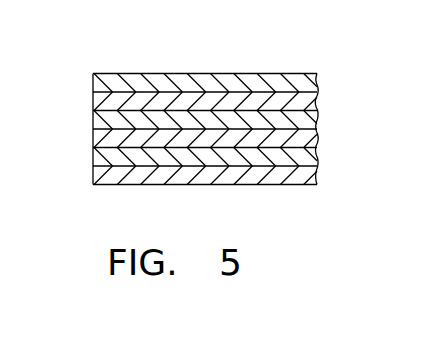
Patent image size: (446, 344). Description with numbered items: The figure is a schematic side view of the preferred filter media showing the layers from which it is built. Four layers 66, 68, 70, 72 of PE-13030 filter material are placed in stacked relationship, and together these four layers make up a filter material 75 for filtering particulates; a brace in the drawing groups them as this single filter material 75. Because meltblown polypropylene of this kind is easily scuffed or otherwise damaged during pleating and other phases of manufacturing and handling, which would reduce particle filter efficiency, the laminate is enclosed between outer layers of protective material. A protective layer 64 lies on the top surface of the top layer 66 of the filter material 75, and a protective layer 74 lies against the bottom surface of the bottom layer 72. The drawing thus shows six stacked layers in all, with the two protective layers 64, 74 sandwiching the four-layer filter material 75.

The protective layer 64 is at (317, 81).
The top layer of filter material 66 is at (317, 100).
The layer of filter material 68 is at (317, 120).
The layer of filter material 70 is at (317, 137).
The bottom layer of filter material 72 is at (317, 157).
The protective layer 74 is at (317, 177).
The filter material 75 is at (86, 90).